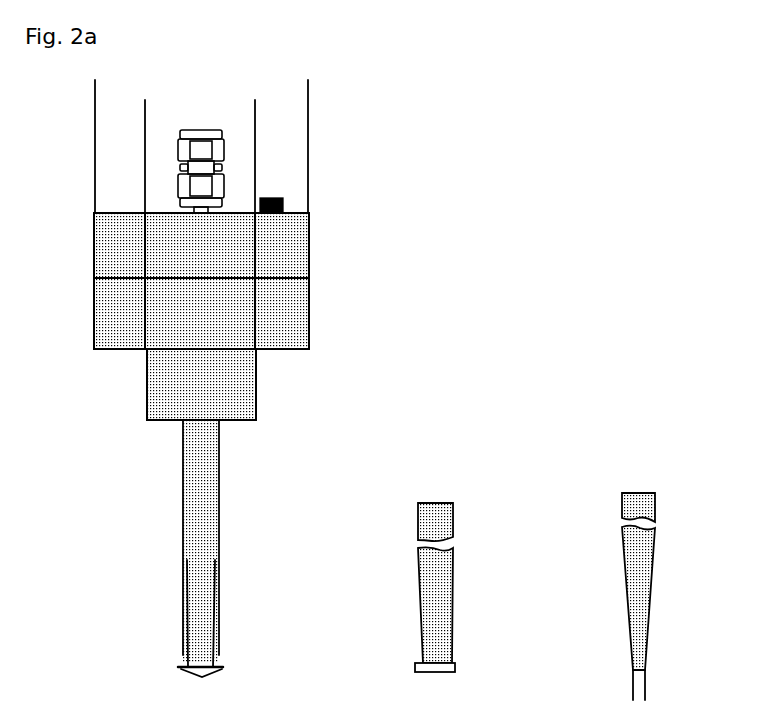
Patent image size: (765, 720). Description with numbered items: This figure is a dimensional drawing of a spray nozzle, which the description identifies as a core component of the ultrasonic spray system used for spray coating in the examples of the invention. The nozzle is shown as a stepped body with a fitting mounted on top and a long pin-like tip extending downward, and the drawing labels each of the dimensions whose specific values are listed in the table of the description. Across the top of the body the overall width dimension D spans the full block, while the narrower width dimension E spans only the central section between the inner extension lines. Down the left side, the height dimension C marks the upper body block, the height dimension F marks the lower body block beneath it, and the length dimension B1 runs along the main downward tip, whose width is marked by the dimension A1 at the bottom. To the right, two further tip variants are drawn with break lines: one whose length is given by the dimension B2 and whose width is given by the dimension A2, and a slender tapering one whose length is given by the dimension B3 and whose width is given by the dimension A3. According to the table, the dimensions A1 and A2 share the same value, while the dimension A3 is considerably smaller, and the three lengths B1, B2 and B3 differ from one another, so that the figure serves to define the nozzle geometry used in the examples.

The dimension D is at (307, 90).
The dimension E is at (254, 112).
The dimension C is at (92, 213).
The dimension F is at (143, 420).
The dimension B1 is at (180, 675).
The dimension A1 is at (272, 688).
The dimension B2 is at (417, 503).
The dimension A2 is at (508, 688).
The dimension B3 is at (615, 493).
The dimension A3 is at (697, 688).